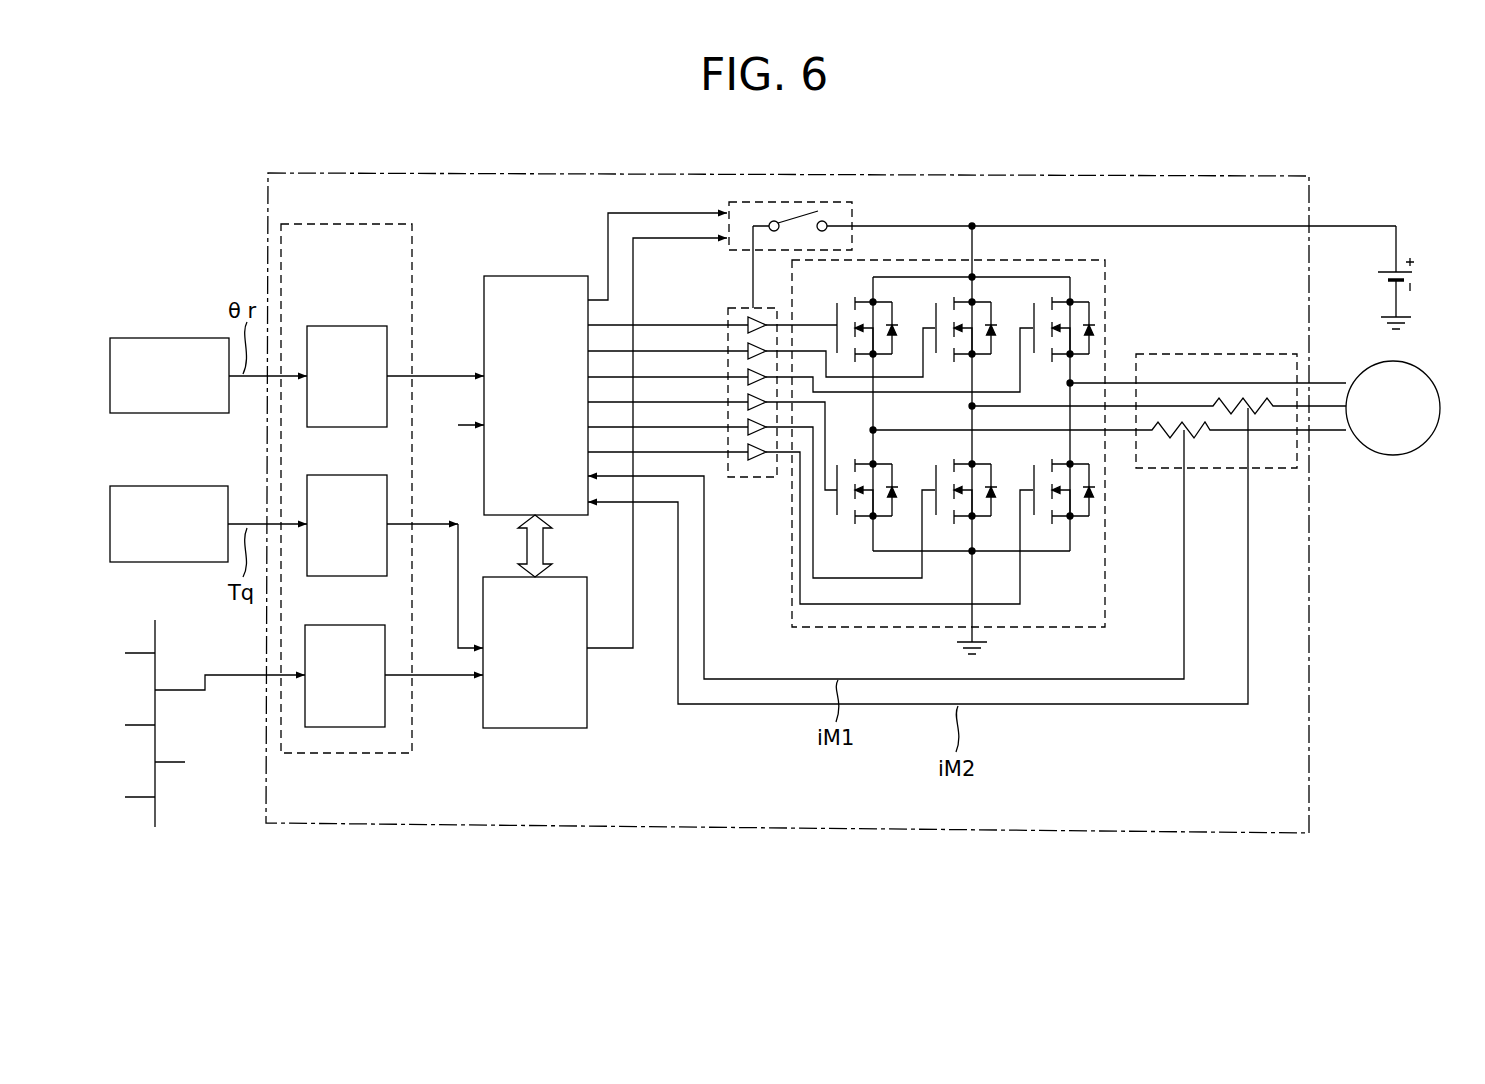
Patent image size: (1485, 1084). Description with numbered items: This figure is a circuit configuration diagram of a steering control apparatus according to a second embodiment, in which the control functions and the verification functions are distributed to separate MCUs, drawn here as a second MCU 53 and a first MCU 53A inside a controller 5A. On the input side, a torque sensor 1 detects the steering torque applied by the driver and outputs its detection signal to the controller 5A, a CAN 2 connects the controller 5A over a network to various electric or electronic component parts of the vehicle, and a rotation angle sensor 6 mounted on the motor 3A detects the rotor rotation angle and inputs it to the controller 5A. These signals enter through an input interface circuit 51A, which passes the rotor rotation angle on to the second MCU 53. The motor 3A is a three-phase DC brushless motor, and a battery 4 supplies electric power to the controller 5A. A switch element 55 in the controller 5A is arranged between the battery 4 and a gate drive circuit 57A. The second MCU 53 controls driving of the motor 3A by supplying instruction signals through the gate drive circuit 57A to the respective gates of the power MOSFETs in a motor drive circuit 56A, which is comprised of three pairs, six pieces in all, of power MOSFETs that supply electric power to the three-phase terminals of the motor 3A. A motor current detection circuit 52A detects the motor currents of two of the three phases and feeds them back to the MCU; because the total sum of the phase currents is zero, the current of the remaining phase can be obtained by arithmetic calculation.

The torque sensor 1 is at (190, 486).
The CAN 2 is at (165, 680).
The motor 3A is at (1390, 455).
The battery 4 is at (1376, 272).
The controller 5A is at (1310, 730).
The rotation angle sensor 6 is at (190, 338).
The input interface circuit 51A is at (340, 755).
The motor current detection circuit 52A is at (1270, 354).
The second MCU 53 is at (533, 276).
The first MCU 53A is at (535, 728).
The switch element 55 is at (743, 252).
The motor drive circuit 56A is at (1106, 288).
The gate drive circuit 57A is at (753, 477).